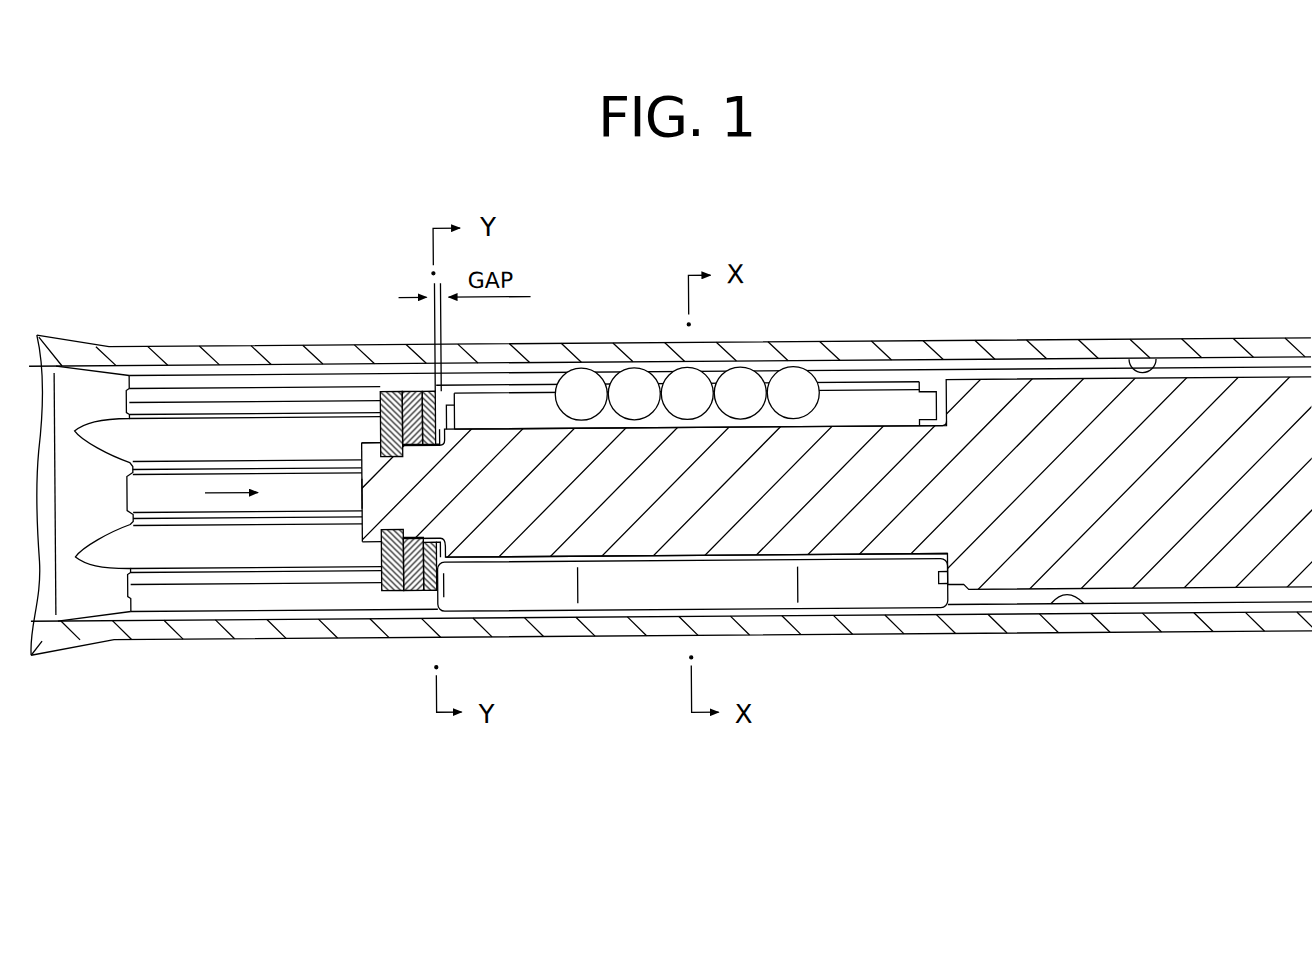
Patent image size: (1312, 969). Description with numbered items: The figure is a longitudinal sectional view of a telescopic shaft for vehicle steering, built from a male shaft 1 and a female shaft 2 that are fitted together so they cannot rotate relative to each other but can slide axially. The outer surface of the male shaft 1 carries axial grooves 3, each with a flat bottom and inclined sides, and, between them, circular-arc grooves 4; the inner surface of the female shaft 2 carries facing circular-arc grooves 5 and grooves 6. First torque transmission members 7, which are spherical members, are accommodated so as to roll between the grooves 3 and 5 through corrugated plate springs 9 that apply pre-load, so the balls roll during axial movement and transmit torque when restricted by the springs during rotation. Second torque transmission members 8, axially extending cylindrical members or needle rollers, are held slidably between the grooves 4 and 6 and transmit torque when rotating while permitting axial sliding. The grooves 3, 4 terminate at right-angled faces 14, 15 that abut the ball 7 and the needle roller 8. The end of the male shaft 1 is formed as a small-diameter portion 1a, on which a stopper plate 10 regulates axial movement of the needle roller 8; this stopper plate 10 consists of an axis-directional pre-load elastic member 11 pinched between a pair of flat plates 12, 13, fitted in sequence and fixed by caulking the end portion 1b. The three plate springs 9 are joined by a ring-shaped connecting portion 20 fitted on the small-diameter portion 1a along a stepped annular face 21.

The male shaft 1 is at (1234, 570).
The small-diameter portion 1a is at (387, 488).
The end portion 1b is at (362, 444).
The female shaft 2 is at (1135, 640).
The grooves 3 is at (848, 429).
The grooves 4 is at (848, 562).
The grooves 5 is at (1140, 376).
The grooves 6 is at (1050, 615).
The first torque transmission members 7 is at (743, 387).
The second torque transmission members 8 is at (610, 588).
The plate springs 9 is at (526, 409).
The stopper plate 10 is at (354, 573).
The axis-directional pre-load elastic member 11 is at (412, 594).
The flat plate 12 is at (392, 594).
The flat plate 13 is at (430, 594).
The right-angled face 14 is at (921, 390).
The right-angled face 15 is at (940, 581).
The ring-shaped connecting portion 20 is at (418, 449).
The stepped annular face 21 is at (430, 529).